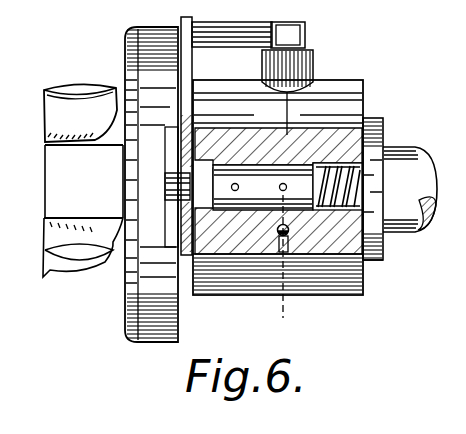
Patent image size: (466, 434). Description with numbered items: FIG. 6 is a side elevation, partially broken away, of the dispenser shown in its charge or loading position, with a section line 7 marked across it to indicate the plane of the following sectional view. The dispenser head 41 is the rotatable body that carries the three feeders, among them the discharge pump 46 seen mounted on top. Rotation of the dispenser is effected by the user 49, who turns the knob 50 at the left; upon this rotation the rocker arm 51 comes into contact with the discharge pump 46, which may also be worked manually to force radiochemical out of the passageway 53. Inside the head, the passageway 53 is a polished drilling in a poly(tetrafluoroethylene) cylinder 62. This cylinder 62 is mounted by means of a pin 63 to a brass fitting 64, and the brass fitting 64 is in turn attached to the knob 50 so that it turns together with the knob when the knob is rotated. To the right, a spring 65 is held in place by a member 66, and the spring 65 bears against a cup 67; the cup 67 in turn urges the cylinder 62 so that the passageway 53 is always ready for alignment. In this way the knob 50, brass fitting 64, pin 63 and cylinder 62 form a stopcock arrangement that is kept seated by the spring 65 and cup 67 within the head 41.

The section line 7- 7 is at (352, 13).
The dispenser head 41 is at (262, 280).
The discharge pump 46 is at (305, 72).
The user 49 is at (95, 98).
The knob 50 is at (126, 318).
The rocker arm 51 is at (248, 36).
The passageway 53 is at (374, 261).
The poly(tetrafluoroethylene) cylinder 62 is at (180, 222).
The pin 63 is at (238, 183).
The brass fitting 64 is at (222, 157).
The spring 65 is at (392, 234).
The member 66 is at (377, 143).
The cup 67 is at (340, 190).